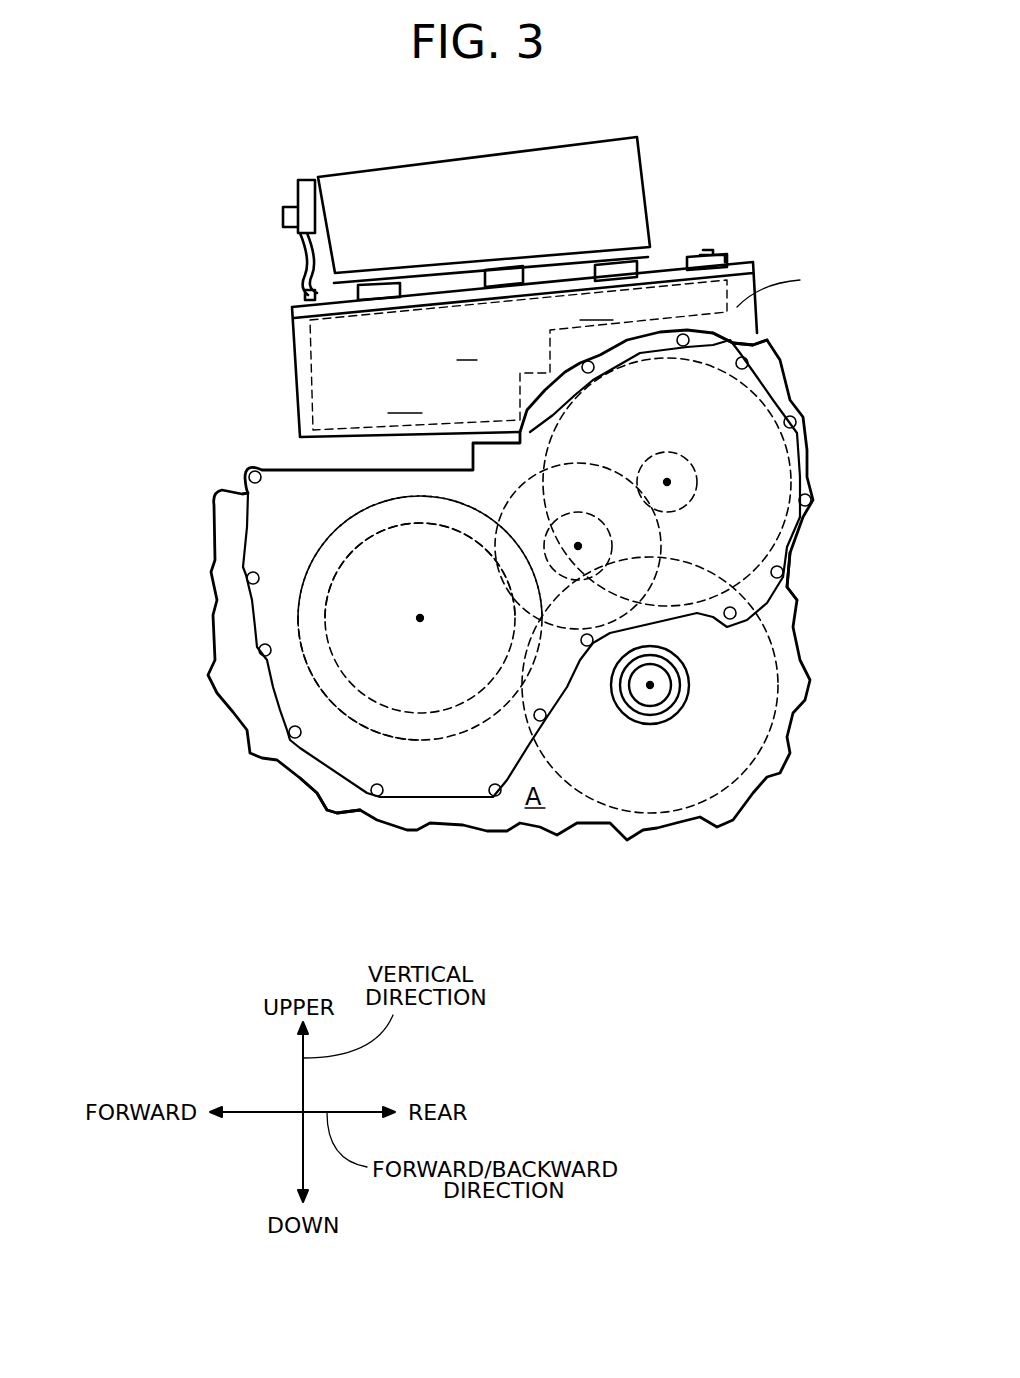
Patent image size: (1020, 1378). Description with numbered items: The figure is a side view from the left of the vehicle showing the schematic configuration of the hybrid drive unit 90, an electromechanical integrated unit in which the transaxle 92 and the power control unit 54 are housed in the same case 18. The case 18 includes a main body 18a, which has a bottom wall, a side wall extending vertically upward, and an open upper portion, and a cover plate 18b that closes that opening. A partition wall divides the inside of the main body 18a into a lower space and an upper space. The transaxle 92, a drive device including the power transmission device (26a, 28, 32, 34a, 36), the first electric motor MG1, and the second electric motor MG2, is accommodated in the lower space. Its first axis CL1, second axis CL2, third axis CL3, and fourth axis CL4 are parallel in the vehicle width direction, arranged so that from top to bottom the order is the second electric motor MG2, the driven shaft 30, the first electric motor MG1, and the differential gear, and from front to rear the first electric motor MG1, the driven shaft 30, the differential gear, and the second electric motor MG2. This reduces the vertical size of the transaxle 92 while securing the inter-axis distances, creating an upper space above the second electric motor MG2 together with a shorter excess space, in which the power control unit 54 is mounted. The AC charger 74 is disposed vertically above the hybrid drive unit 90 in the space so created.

The case 18 is at (437, 845).
The main body 18a is at (330, 797).
The cover plate 18b is at (733, 265).
The power control unit 54 is at (293, 382).
The AC charger 74 is at (467, 203).
The first electric motor MG1 is at (355, 658).
The second electric motor MG2 is at (780, 380).
The power transmission device component 28 is at (543, 492).
The power transmission device component 32 is at (533, 553).
The power transmission device component 26a is at (352, 720).
The power transmission device component 36 is at (652, 482).
The power transmission device component 34a is at (795, 600).
The driven shaft 30 is at (875, 742).
The first axis CL1 is at (420, 618).
The second axis CL2 is at (578, 546).
The third axis CL3 is at (667, 482).
The fourth axis CL4 is at (650, 685).
The hybrid drive unit 90 is at (68, 393).
The transaxle 92 is at (130, 548).